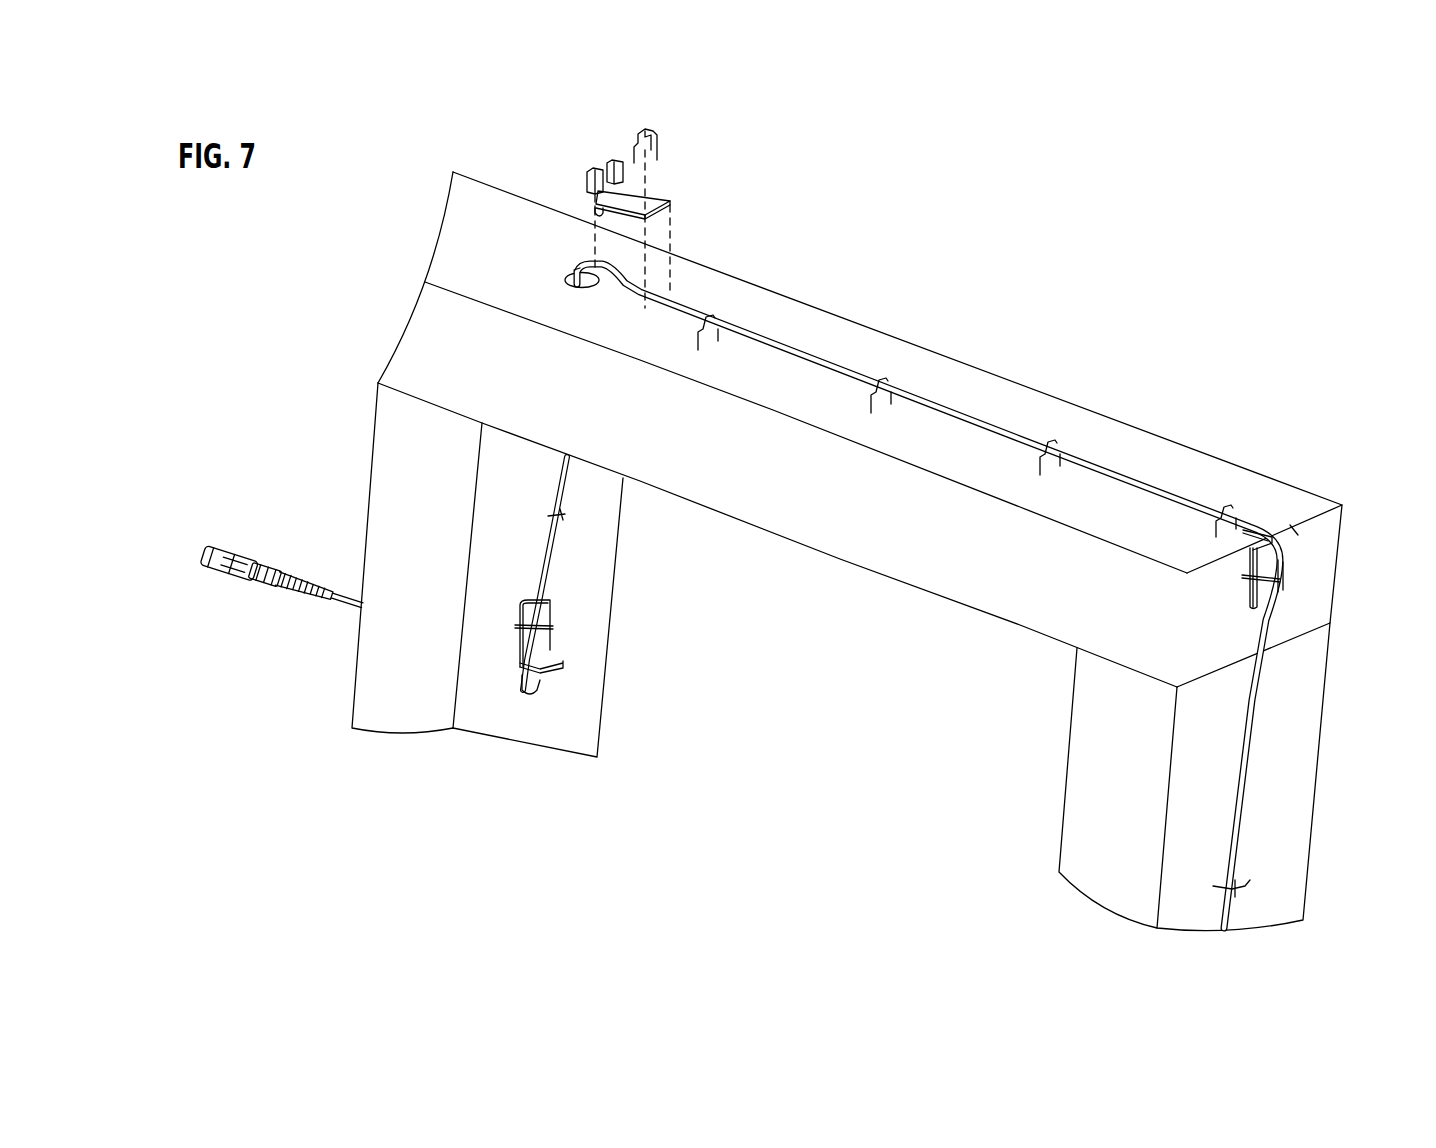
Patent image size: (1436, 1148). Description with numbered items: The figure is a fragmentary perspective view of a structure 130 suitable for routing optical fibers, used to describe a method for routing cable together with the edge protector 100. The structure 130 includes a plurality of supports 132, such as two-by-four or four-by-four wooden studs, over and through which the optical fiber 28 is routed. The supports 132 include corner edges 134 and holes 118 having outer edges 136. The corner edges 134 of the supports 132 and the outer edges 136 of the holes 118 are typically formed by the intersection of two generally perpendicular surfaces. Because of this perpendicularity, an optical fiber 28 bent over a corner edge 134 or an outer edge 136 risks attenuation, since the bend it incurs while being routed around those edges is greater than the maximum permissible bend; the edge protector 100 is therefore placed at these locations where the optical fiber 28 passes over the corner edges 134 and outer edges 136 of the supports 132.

The optical fiber 28 is at (840, 367).
The edge protector 100 is at (678, 182).
The hole 118 is at (576, 268).
The structure 130 is at (390, 289).
The support 132 is at (862, 540).
The corner edge 134 is at (1302, 520).
The outer edge 136 is at (583, 288).